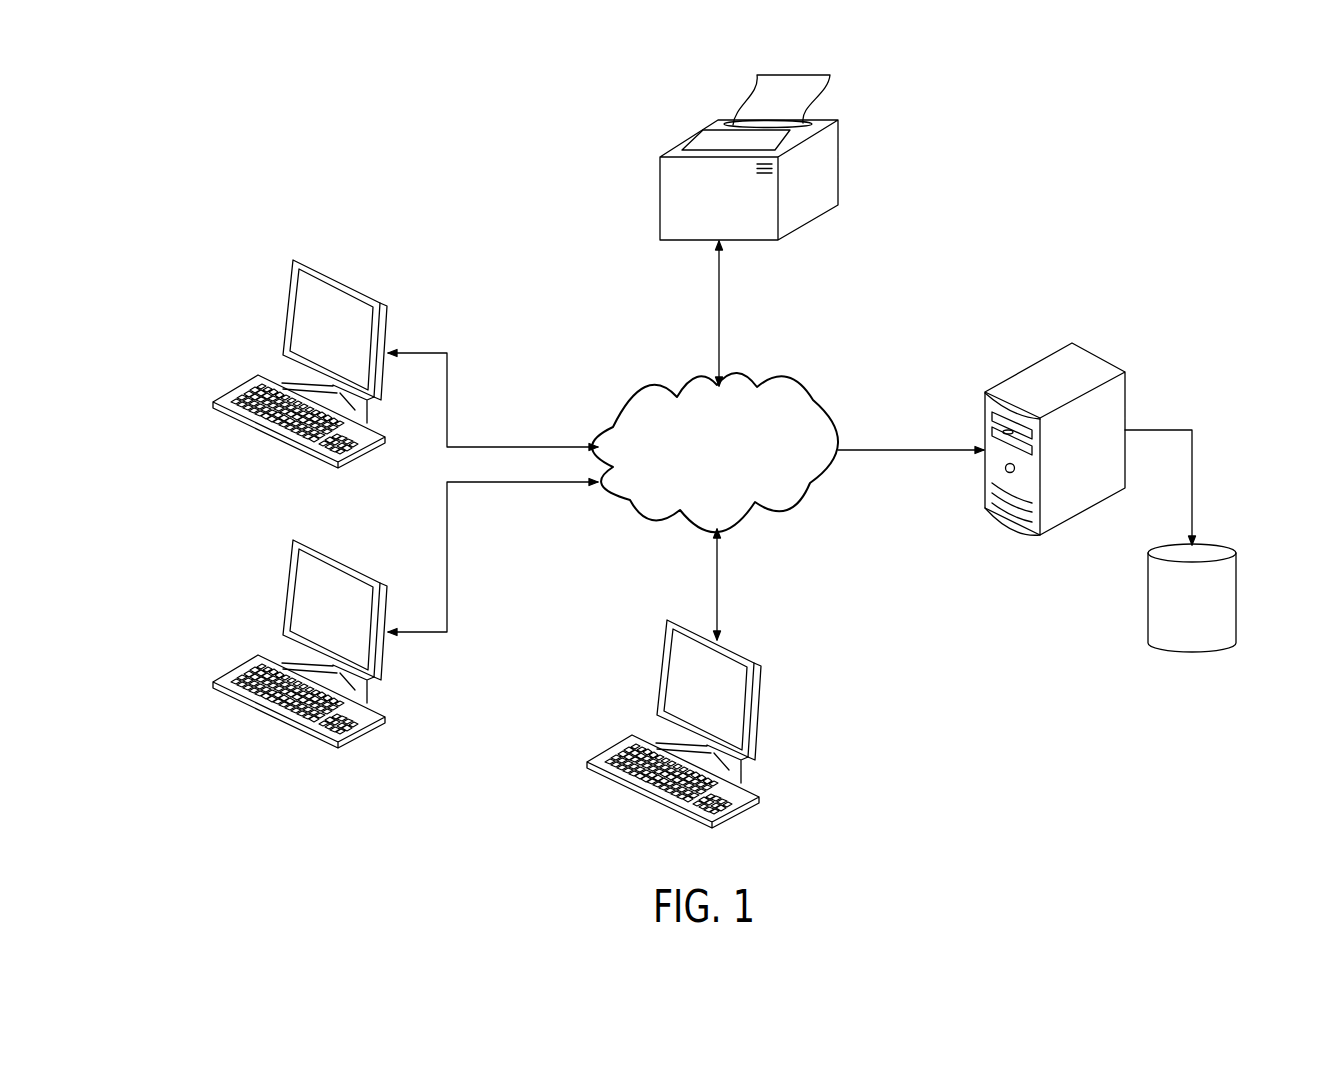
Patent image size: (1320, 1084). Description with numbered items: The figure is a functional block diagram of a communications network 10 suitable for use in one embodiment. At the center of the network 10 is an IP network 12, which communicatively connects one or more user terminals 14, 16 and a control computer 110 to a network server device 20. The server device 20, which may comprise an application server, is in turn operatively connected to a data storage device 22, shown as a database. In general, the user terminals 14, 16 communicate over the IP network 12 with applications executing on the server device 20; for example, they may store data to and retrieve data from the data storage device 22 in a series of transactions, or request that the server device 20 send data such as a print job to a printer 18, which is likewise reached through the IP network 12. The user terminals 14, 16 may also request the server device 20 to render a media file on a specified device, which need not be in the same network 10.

The communications network 10 is at (1120, 207).
The IP network 12 is at (785, 373).
The user terminal 14 is at (288, 593).
The user terminal 16 is at (343, 282).
The printer 18 is at (660, 200).
The network server device 20 is at (1097, 352).
The data storage device 22 is at (1145, 602).
The control computer 110 is at (780, 674).